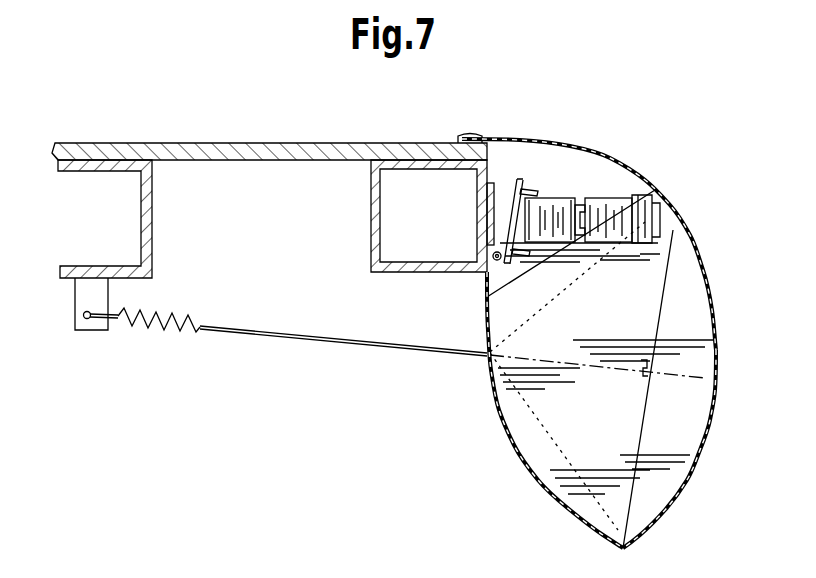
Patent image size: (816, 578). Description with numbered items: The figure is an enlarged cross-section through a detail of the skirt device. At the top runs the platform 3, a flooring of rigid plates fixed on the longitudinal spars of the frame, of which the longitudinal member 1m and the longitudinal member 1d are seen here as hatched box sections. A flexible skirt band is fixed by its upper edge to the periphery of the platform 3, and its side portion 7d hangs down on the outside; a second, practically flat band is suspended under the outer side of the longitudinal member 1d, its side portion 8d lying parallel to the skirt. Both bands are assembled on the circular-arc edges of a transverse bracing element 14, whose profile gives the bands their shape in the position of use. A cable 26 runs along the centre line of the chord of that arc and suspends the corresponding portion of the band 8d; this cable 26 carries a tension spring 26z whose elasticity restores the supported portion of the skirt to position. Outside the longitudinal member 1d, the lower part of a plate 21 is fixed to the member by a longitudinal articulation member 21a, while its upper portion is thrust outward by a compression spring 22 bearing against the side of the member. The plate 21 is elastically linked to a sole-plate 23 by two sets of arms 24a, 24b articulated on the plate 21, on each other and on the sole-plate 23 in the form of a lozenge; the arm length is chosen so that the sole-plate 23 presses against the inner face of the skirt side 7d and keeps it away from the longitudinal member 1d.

The platform 3 is at (230, 143).
The longitudinal spar 1m is at (148, 229).
The longitudinal member 1d is at (376, 222).
The compression spring 22 is at (503, 160).
The longitudinal articulation member 21a is at (493, 254).
The plate 21 is at (520, 264).
The set of arms 24a is at (557, 200).
The set of arms 24b is at (612, 200).
The sole-plate 23 is at (660, 226).
The bracing element 14 is at (683, 382).
The side portion of skirt 7d is at (682, 471).
The side portion of band 8d is at (518, 453).
The cable 26 is at (278, 340).
The tension spring 26z is at (163, 340).